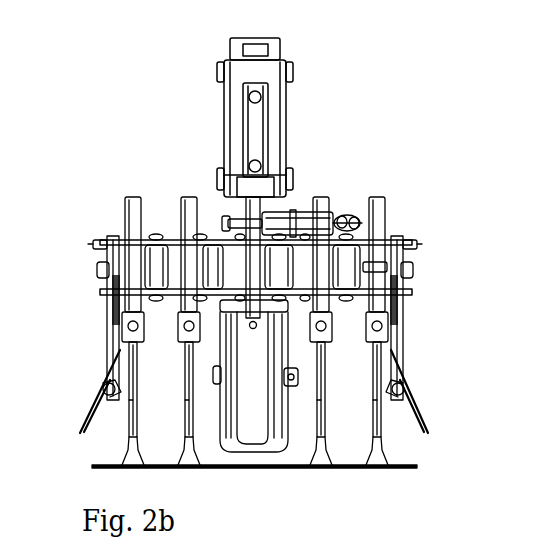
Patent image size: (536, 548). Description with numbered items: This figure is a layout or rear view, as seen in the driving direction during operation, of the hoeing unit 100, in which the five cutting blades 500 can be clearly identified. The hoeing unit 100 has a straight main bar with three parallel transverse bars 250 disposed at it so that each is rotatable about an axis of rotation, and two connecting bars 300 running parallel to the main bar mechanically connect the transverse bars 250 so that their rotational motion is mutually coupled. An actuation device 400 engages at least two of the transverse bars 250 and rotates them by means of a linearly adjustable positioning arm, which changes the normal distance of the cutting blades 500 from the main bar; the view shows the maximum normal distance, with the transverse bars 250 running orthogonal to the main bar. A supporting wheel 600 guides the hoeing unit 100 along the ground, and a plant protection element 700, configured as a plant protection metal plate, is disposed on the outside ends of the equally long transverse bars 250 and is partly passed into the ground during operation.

The hoeing unit 100 is at (132, 87).
The transverse bars 250 is at (347, 217).
The connecting bars 300 is at (372, 250).
The actuation device 400 is at (298, 210).
The cutting blades 500 is at (378, 469).
The supporting wheel 600 is at (193, 255).
The plant protection element 700 is at (97, 410).